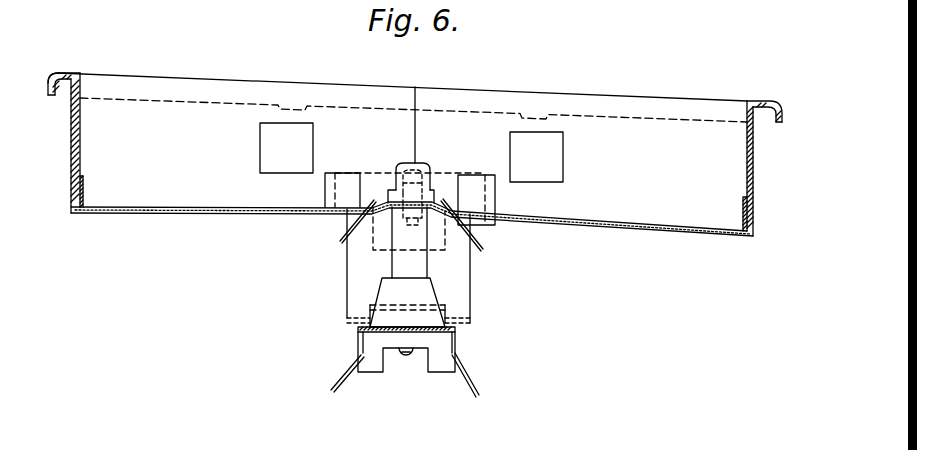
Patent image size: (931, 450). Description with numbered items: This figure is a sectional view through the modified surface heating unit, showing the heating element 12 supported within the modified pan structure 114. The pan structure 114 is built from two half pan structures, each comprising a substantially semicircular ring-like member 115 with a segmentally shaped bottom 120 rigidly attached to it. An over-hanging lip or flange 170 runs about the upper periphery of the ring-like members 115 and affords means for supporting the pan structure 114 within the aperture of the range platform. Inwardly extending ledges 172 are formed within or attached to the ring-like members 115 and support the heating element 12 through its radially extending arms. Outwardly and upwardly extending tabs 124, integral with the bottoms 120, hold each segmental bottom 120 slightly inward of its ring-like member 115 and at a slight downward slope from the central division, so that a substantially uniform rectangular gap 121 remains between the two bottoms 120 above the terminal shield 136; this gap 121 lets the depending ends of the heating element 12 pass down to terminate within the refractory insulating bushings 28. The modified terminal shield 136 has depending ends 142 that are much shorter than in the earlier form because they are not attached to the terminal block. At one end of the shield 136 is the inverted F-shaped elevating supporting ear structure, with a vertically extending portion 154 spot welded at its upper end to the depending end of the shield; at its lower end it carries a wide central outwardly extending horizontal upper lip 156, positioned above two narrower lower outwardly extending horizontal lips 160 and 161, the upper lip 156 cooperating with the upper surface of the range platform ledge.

The heating element 12 is at (400, 165).
The refractory insulating bushings 28 is at (373, 362).
The pan structure 114 is at (105, 87).
The ring-like member 115 is at (73, 148).
The segmental bottom 120 is at (188, 214).
The rectangular gap 121 is at (390, 194).
The tabs 124 is at (83, 189).
The terminal shield 136 is at (343, 240).
The depending ends 142 is at (352, 258).
The vertically extending portion 154 is at (465, 288).
The central outwardly extending horizontal upper lip portion 156 is at (437, 311).
The lower outwardly extending horizontal lip 160 is at (350, 325).
The lower outwardly extending horizontal lip 161 is at (463, 330).
The over-hanging lip 170 is at (62, 88).
The inwardly extending ledges 172 is at (268, 147).